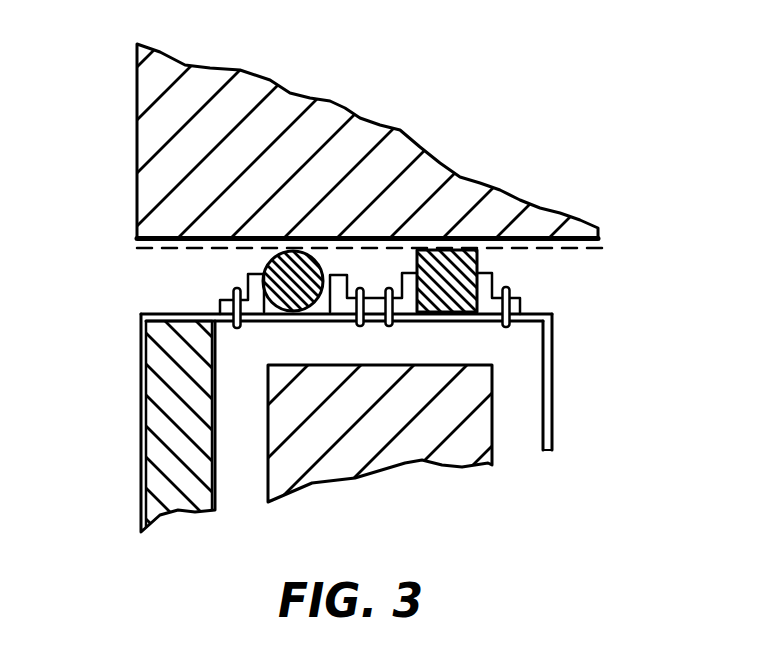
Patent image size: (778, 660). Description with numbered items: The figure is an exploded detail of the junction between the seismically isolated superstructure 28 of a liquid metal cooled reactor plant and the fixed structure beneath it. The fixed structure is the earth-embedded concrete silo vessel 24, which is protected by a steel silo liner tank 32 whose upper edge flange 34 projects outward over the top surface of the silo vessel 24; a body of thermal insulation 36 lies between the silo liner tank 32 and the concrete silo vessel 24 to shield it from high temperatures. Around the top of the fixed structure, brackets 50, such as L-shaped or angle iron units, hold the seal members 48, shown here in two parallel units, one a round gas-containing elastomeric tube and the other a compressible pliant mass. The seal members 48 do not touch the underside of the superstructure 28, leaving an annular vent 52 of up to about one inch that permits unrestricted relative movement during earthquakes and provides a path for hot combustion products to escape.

The silo vessel 24 is at (345, 470).
The superstructure 28 is at (451, 150).
The silo liner tank 32 is at (139, 422).
The upper edge flange 34 is at (533, 312).
The thermal insulation 36 is at (193, 497).
The seal member 48 is at (325, 268).
The bracket 50 is at (243, 299).
The annular vent 52 is at (566, 246).